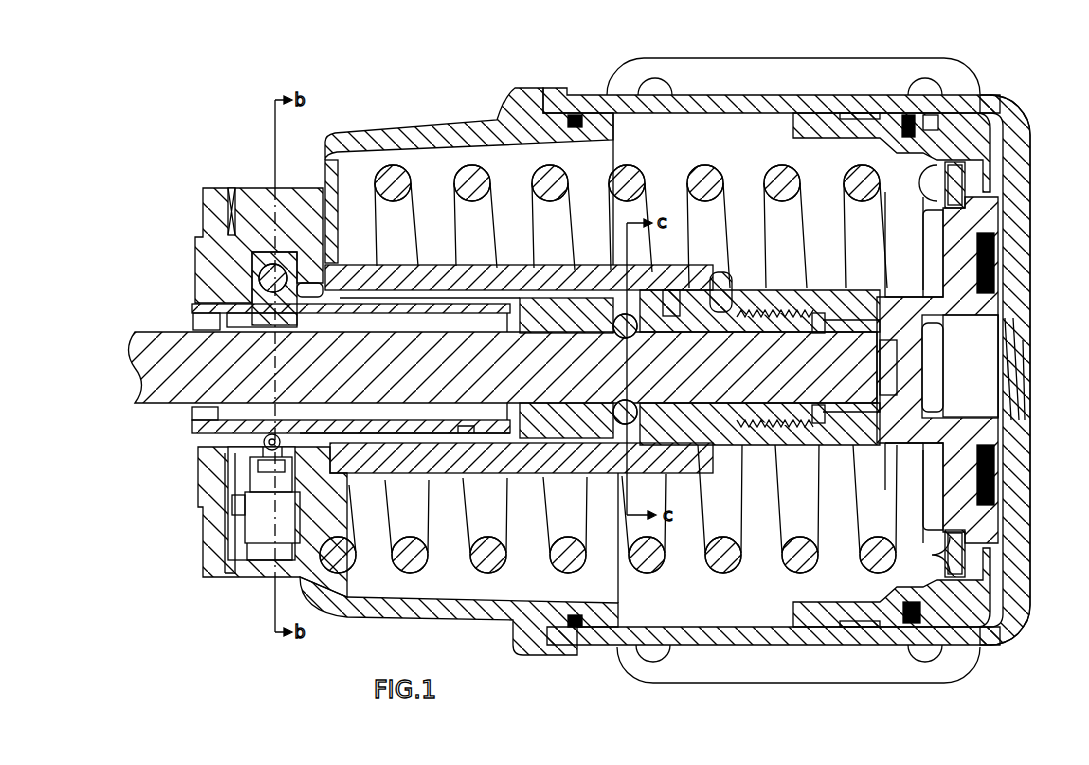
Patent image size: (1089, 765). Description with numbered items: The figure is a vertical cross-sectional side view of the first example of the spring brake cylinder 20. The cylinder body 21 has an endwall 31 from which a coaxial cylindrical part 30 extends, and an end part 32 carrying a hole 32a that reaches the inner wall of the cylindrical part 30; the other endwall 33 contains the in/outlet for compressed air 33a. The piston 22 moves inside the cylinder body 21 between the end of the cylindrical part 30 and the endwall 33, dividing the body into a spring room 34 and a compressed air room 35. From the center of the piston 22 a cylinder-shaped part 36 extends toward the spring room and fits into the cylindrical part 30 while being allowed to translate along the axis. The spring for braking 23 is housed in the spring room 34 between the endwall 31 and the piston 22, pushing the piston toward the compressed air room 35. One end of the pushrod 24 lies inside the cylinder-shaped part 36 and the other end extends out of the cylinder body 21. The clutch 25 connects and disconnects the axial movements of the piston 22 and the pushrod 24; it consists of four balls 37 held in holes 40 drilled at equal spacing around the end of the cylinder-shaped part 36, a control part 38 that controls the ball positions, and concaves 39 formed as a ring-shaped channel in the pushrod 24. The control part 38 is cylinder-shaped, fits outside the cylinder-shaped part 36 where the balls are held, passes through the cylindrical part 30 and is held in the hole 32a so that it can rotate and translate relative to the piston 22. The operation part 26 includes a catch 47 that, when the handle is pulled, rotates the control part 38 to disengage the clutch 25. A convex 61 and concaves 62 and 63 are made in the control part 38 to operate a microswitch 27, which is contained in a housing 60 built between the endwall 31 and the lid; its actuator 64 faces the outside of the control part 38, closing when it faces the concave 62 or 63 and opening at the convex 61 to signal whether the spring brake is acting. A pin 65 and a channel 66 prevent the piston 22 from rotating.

The spring brake cylinder 20 is at (1030, 165).
The cylinder body 21 is at (600, 95).
The piston 22 is at (995, 138).
The spring for braking 23 is at (390, 166).
The pushrod 24 is at (150, 408).
The clutch 25 is at (648, 447).
The operation part 26 is at (278, 262).
The microswitch 27 is at (264, 546).
The cylindrical part 30 is at (518, 270).
The endwall 31 is at (325, 167).
The end part 32 is at (203, 253).
The hole 32a is at (215, 311).
The endwall 33 is at (1031, 187).
The in/outlet for compressed air 33a is at (1018, 403).
The spring room 34 is at (757, 133).
The compressed air room 35 is at (1000, 556).
The cylinder-shaped part 36 is at (786, 305).
The balls 37 is at (633, 336).
The control part 38 is at (553, 298).
The concaves 39 is at (636, 404).
The holes 40 is at (622, 405).
The catch 47 is at (252, 287).
The housing 60 is at (225, 543).
The convex 61 is at (422, 427).
The concave 62 is at (245, 447).
The concave 63 is at (466, 427).
The actuator 64 is at (276, 435).
The pin 65 is at (673, 318).
The channel 66 is at (714, 278).